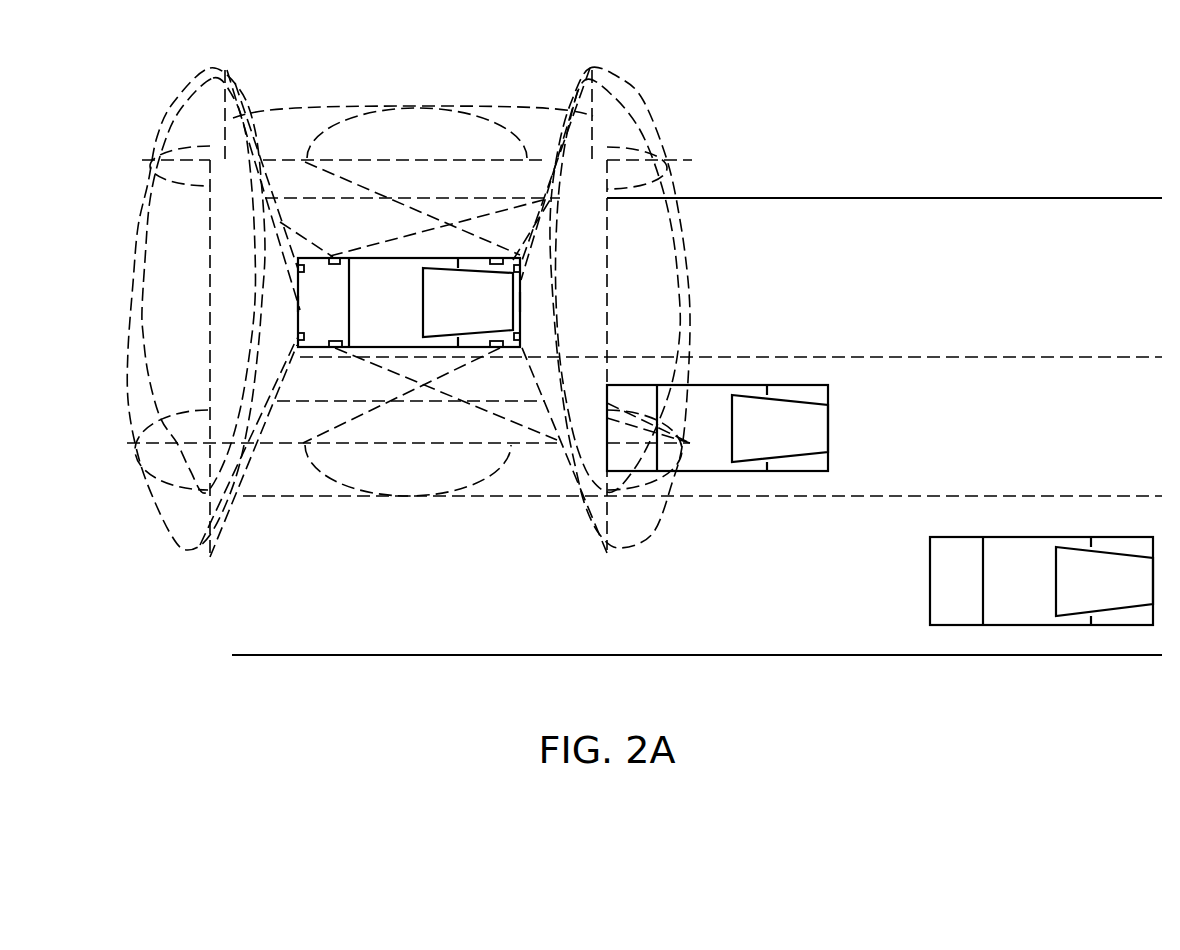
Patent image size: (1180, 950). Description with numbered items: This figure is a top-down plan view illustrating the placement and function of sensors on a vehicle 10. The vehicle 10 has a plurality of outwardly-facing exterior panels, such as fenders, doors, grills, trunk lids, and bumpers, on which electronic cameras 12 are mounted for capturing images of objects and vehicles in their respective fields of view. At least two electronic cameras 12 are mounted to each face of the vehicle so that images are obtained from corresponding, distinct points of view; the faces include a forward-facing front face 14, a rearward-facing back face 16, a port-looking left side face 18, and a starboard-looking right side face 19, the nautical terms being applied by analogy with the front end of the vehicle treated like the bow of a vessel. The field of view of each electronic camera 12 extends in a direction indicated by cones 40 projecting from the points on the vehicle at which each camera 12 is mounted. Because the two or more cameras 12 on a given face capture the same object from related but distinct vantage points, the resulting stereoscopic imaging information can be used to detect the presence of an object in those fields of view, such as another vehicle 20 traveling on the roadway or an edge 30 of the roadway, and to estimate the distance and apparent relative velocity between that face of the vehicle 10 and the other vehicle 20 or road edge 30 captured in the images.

The vehicle 10 is at (370, 311).
The electronic cameras 12 is at (301, 272).
The front face 14 is at (522, 305).
The back face 16 is at (296, 304).
The left side face 18 is at (400, 258).
The right side face 19 is at (378, 348).
The another vehicle 20 is at (703, 437).
The edge of the roadway 30 is at (743, 198).
The cones 40 is at (278, 213).